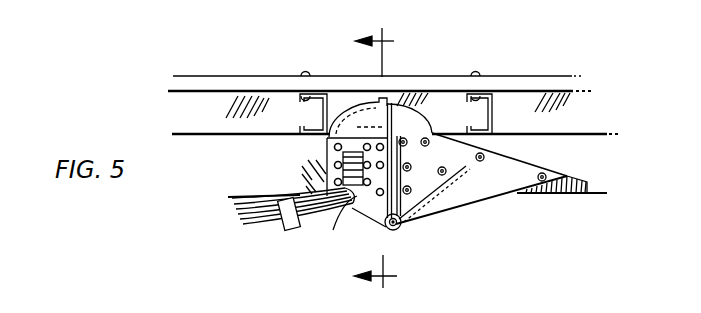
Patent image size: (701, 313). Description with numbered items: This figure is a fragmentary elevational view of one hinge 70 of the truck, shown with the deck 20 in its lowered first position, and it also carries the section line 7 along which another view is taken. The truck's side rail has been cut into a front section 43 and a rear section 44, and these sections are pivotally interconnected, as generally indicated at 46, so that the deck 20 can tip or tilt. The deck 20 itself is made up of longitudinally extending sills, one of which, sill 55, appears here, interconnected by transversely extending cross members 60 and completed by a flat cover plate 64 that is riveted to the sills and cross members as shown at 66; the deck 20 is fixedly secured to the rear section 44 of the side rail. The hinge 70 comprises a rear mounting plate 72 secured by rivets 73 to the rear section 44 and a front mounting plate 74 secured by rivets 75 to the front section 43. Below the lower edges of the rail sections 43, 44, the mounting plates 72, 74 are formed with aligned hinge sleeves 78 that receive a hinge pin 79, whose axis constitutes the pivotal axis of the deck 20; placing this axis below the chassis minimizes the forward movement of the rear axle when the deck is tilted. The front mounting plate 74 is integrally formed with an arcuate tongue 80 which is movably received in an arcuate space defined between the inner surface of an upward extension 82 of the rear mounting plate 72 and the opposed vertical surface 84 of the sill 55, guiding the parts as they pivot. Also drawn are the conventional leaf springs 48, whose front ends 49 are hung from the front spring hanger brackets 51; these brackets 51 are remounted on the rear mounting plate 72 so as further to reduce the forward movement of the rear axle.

The section line 7- 7 is at (372, 162).
The deck 20 is at (537, 74).
The front section 43 is at (587, 170).
The rear section 44 is at (253, 183).
The pivotal interconnection 46 is at (468, 217).
The leaf springs 48 is at (267, 231).
The front ends 49 is at (352, 208).
The spring hanger brackets 51 is at (355, 158).
The sill 55 is at (548, 113).
The cross members 60 is at (498, 106).
The cover plate 64 is at (236, 80).
The rivets 66 is at (303, 74).
The hinge 70 is at (403, 236).
The rear mounting plate 72 is at (367, 208).
The rivets 73 is at (378, 200).
The front mounting plate 74 is at (478, 195).
The rivets 75 is at (542, 193).
The hinge sleeves 78 is at (405, 228).
The hinge pin 79 is at (410, 212).
The arcuate tongue 80 is at (405, 117).
The upward extension 82 is at (352, 100).
The vertical surface 84 is at (384, 114).